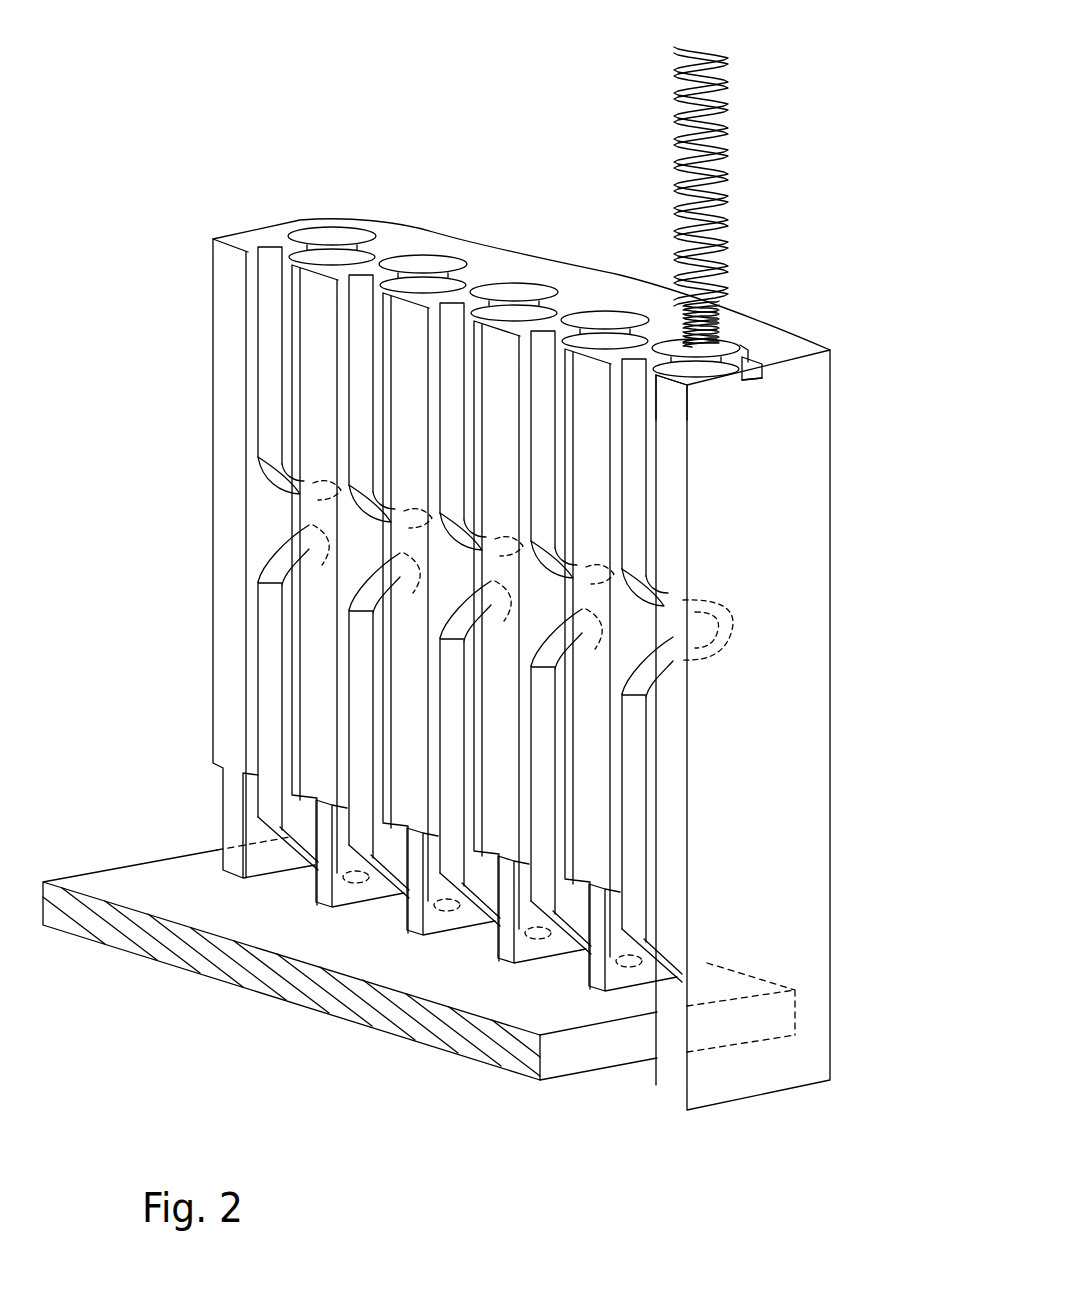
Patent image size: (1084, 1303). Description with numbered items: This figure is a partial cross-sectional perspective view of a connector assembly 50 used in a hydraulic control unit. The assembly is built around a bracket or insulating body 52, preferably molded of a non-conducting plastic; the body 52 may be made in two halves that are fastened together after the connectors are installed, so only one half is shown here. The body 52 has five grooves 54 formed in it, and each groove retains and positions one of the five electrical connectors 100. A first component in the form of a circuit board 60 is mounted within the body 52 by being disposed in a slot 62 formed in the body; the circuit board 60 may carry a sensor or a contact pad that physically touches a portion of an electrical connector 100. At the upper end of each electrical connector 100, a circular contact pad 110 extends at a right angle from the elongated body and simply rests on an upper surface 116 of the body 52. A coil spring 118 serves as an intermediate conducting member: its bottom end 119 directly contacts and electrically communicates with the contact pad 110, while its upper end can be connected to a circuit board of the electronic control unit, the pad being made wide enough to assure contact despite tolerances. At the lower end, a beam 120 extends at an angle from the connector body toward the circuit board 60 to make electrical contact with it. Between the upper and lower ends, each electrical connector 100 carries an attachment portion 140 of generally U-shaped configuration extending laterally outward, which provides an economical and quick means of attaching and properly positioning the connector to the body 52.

The connector assembly 50 is at (203, 155).
The insulating body 52 is at (228, 370).
The grooves 54 is at (657, 628).
The circuit board 60 is at (182, 890).
The slot 62 is at (657, 1032).
The electrical connector 100 is at (600, 314).
The contact pad 110 is at (723, 342).
The upper surface 116 is at (688, 381).
The coil spring 118 is at (725, 173).
The bottom end 119 is at (717, 358).
The beam 120 is at (707, 963).
The attachment portion 140 is at (727, 630).